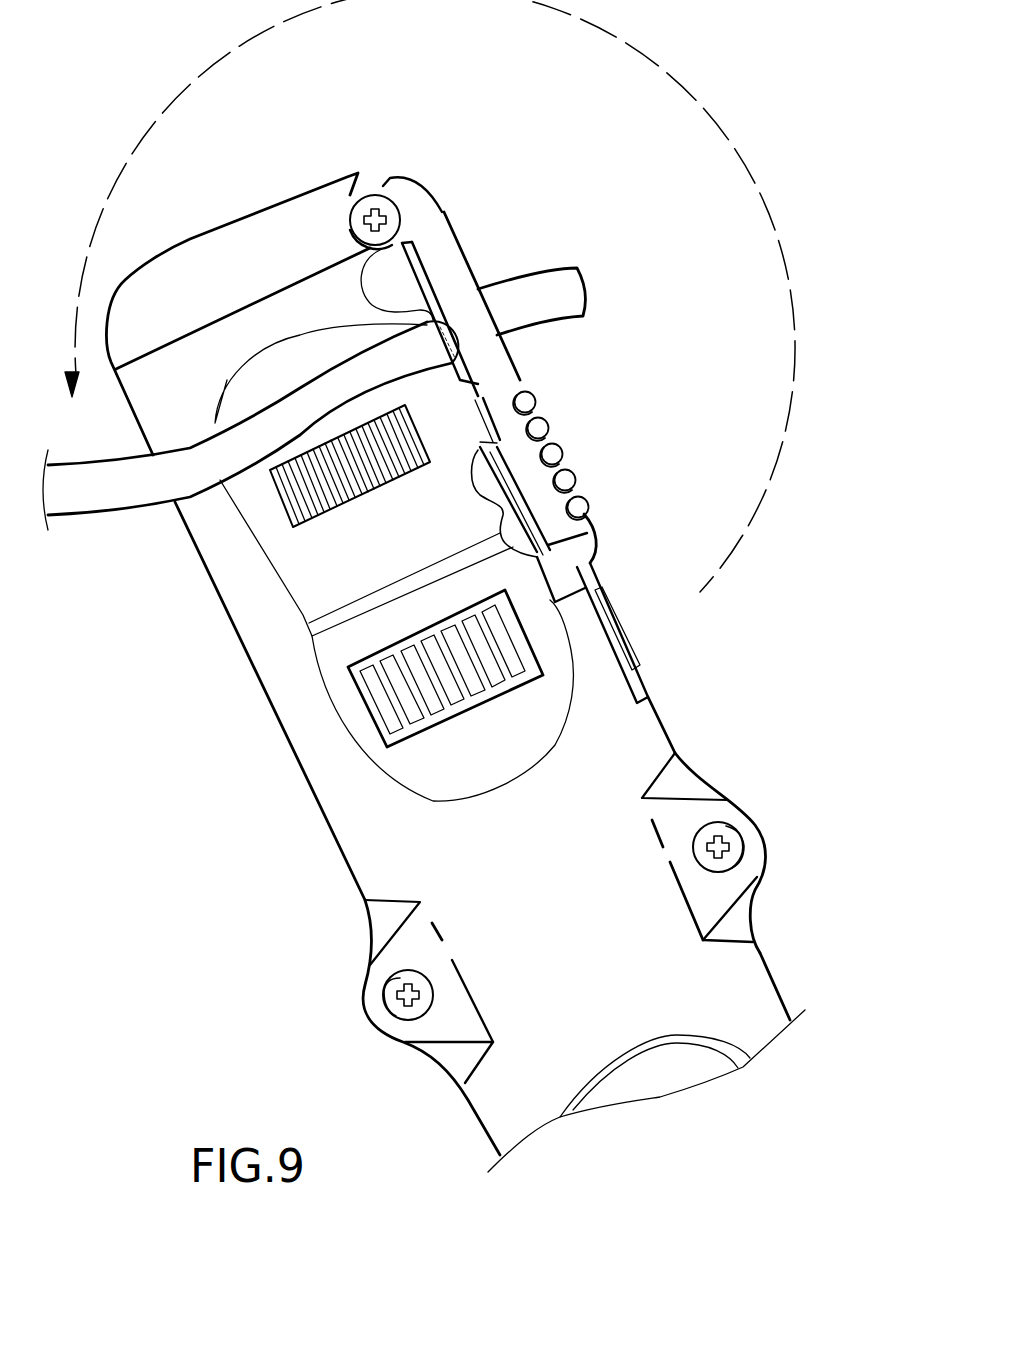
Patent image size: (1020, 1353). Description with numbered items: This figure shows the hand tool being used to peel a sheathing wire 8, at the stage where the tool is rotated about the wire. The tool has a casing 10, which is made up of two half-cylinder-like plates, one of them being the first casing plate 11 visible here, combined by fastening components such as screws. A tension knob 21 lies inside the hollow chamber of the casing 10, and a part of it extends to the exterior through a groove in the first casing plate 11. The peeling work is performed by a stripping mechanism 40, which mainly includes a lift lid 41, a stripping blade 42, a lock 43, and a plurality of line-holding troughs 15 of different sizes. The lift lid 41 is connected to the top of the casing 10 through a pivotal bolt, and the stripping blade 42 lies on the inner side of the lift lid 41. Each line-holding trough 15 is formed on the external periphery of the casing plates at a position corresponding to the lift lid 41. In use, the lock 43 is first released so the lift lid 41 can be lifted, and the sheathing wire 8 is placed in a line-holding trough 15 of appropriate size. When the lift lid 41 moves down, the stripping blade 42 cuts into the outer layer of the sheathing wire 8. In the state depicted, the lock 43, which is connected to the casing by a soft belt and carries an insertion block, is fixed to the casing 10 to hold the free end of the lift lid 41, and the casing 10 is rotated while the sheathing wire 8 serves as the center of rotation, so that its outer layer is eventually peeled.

The sheathing wire 8 is at (570, 290).
The casing 10 is at (213, 590).
The first casing plate 11 is at (253, 627).
The line-holding troughs 15 is at (395, 290).
The tension knob 21 is at (400, 703).
The stripping mechanism 40 is at (592, 498).
The lift lid 41 is at (498, 370).
The stripping blade 42 is at (427, 287).
The lock 43 is at (590, 580).